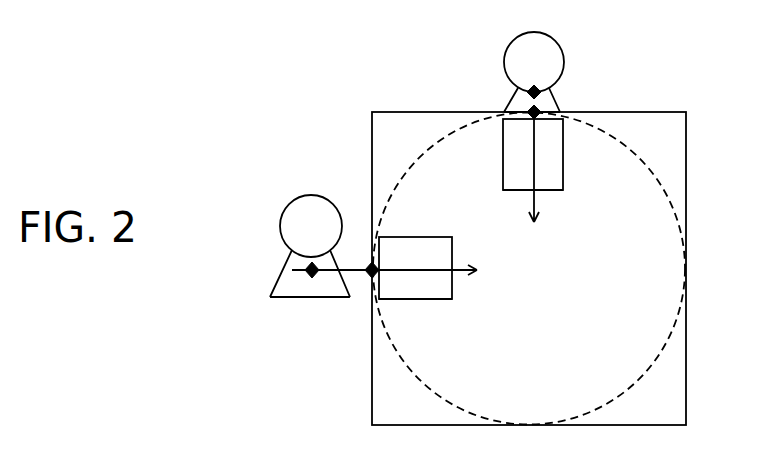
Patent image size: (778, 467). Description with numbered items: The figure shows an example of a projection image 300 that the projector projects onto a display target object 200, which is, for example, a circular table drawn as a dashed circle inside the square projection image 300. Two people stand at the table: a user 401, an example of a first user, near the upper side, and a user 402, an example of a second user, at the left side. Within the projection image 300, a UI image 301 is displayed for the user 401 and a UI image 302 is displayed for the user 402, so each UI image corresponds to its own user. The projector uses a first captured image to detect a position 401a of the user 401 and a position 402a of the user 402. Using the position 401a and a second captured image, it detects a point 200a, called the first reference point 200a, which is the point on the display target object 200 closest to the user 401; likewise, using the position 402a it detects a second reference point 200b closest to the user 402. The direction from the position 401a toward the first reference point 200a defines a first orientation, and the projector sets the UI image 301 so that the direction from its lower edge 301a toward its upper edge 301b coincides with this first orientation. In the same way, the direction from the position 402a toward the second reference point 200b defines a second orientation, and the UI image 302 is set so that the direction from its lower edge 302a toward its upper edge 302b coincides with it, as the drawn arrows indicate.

The display target object 200 is at (655, 257).
The first reference point 200a is at (540, 110).
The second reference point 200b is at (369, 280).
The projection image 300 is at (660, 398).
The UI image 301 is at (557, 160).
The lower edge 301a is at (590, 122).
The upper edge 301b is at (547, 190).
The UI image 302 is at (427, 247).
The lower edge 302a is at (390, 247).
The upper edge 302b is at (442, 284).
The user 401 is at (503, 69).
The position 401a is at (530, 92).
The user 402 is at (274, 228).
The position 402a is at (292, 270).